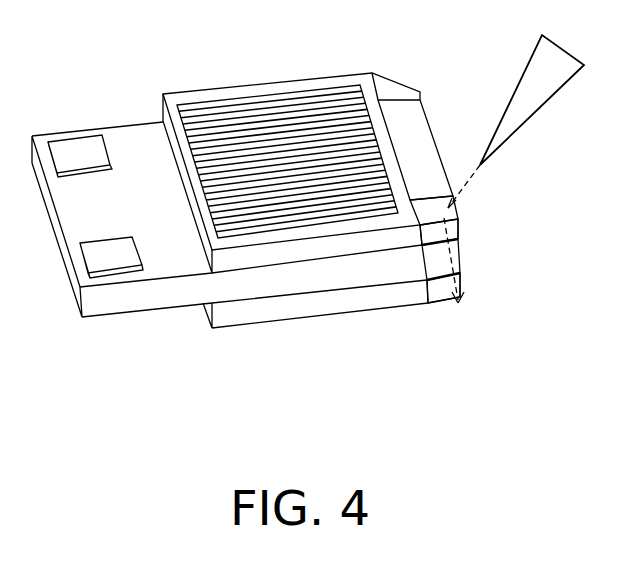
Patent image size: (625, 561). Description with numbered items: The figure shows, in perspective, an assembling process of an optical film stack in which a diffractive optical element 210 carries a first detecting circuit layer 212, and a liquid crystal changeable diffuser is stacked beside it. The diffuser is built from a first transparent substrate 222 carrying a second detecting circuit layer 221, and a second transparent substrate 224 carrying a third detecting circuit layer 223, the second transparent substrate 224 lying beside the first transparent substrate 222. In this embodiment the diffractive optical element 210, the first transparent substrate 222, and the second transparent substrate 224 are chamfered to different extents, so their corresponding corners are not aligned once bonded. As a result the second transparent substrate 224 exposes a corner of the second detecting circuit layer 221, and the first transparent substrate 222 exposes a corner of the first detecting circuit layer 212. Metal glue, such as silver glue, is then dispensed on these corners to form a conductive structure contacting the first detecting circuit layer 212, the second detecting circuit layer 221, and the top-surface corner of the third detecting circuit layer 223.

The diffractive optical element 210 is at (233, 315).
The first detecting circuit layer 212 is at (428, 281).
The second detecting circuit layer 221 is at (420, 242).
The first transparent substrate 222 is at (152, 297).
The third detecting circuit layer 223 is at (343, 98).
The second transparent substrate 224 is at (257, 93).